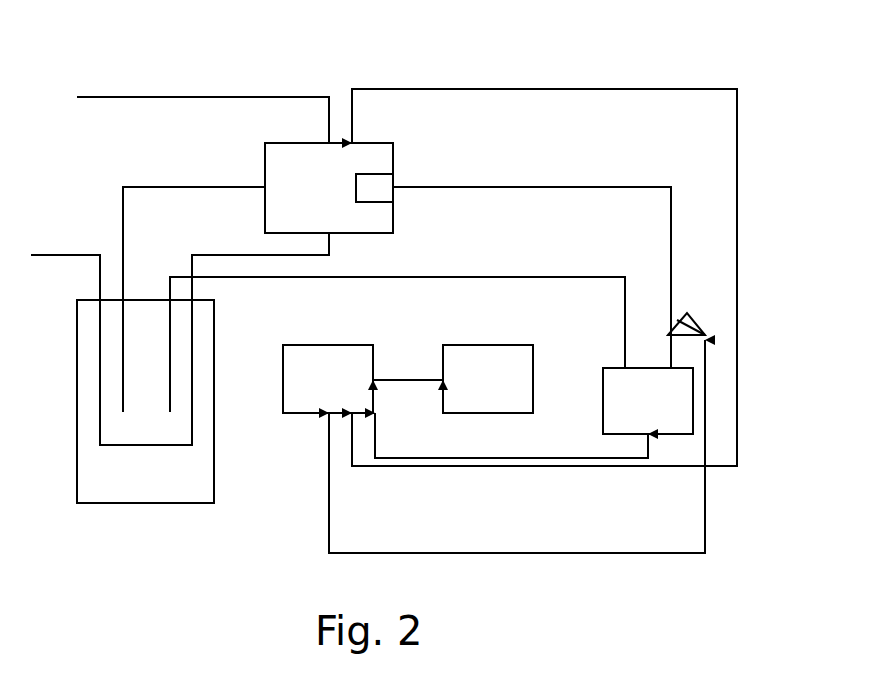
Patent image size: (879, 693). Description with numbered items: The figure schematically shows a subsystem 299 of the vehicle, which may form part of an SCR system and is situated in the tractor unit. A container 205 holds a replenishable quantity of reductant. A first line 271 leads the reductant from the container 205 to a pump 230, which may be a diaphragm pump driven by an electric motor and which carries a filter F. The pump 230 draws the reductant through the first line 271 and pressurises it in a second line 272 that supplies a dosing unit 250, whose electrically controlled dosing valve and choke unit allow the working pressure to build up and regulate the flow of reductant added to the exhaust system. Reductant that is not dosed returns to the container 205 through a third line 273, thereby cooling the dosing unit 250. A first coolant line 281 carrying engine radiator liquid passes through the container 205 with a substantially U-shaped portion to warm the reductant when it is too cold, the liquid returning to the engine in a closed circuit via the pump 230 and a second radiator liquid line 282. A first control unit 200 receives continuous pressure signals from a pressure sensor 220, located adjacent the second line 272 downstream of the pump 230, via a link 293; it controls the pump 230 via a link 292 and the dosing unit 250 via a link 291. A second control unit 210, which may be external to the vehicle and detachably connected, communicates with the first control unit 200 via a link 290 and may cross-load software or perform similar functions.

The first control unit 200 is at (328, 379).
The container 205 is at (97, 503).
The second control unit 210 is at (488, 379).
The pressure sensor 220 is at (682, 313).
The pump 230 is at (329, 188).
The dosing unit 250 is at (648, 401).
The first line 271 is at (167, 187).
The second line 272 is at (482, 187).
The third line 273 is at (606, 277).
The first coolant line 281 is at (80, 254).
The second radiator liquid line 282 is at (168, 97).
The link 290 is at (405, 378).
The link 291 is at (540, 458).
The link 292 is at (555, 466).
The link 293 is at (331, 526).
The subsystem 299 is at (414, 66).